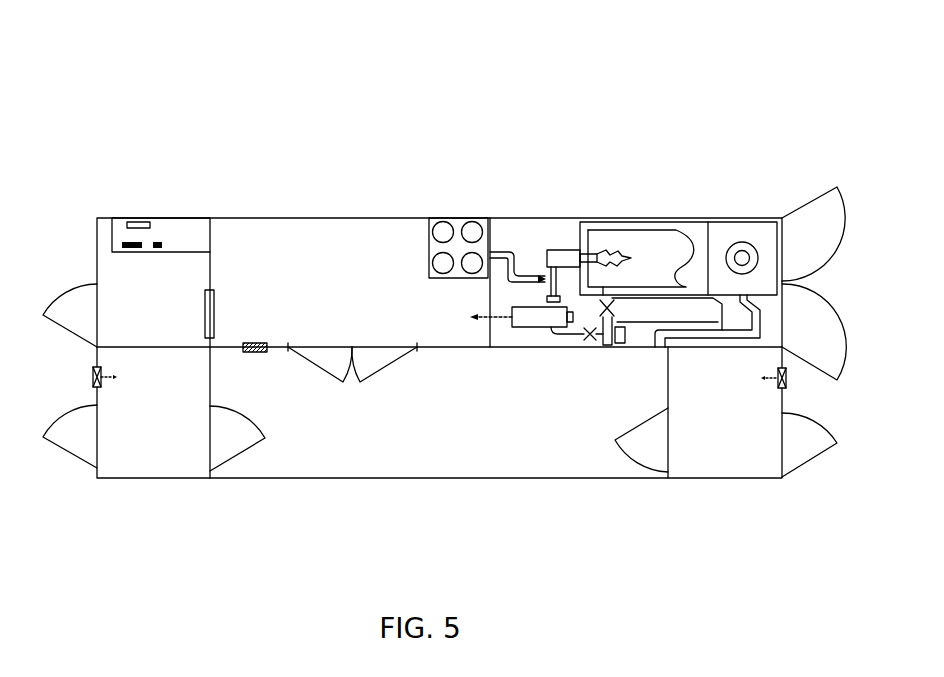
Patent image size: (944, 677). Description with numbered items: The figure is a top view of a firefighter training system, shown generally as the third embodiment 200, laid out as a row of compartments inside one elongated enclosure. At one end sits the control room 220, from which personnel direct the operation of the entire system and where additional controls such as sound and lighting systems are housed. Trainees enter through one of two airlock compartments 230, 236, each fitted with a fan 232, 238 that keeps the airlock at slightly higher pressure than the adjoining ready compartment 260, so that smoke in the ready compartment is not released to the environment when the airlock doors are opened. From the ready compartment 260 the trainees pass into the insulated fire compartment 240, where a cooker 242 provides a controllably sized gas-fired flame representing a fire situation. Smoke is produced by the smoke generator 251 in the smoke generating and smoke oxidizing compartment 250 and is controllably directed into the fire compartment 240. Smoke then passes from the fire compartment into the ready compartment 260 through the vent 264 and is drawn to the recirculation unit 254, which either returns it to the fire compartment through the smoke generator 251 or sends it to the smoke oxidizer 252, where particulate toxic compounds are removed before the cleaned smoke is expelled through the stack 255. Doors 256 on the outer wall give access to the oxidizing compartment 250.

The third embodiment 200 is at (272, 92).
The control room 220 is at (159, 272).
The airlock compartment 230 is at (159, 436).
The fan 232 is at (78, 373).
The airlock compartment 236 is at (718, 450).
The fan 238 is at (804, 393).
The fire compartment 240 is at (346, 260).
The cooker 242 is at (454, 221).
The smoke generating and smoke oxidizing compartment 250 is at (532, 230).
The smoke generator 251 is at (532, 327).
The smoke oxidizer 252 is at (607, 239).
The recirculation unit 254 is at (717, 231).
The stack 255 is at (750, 240).
The doors 256 is at (797, 226).
The ready compartment 260 is at (428, 427).
The vent 264 is at (256, 362).